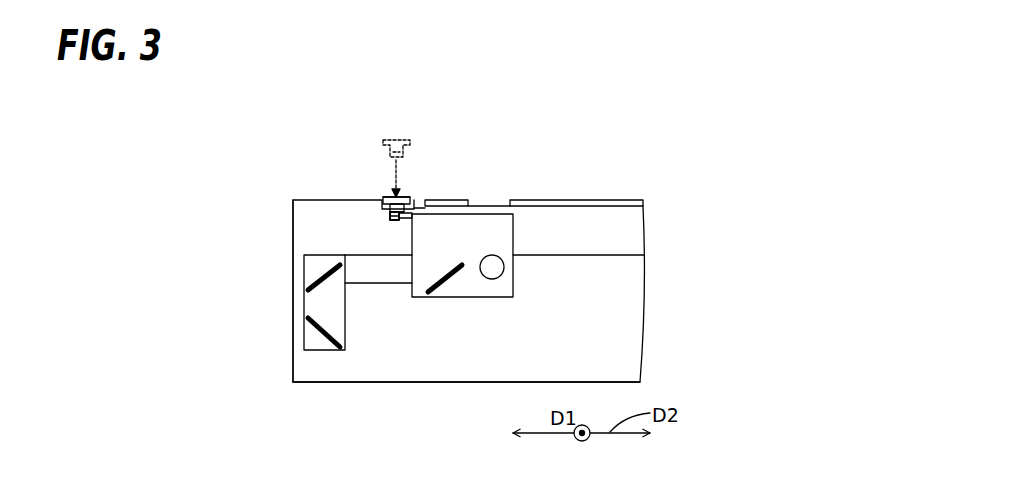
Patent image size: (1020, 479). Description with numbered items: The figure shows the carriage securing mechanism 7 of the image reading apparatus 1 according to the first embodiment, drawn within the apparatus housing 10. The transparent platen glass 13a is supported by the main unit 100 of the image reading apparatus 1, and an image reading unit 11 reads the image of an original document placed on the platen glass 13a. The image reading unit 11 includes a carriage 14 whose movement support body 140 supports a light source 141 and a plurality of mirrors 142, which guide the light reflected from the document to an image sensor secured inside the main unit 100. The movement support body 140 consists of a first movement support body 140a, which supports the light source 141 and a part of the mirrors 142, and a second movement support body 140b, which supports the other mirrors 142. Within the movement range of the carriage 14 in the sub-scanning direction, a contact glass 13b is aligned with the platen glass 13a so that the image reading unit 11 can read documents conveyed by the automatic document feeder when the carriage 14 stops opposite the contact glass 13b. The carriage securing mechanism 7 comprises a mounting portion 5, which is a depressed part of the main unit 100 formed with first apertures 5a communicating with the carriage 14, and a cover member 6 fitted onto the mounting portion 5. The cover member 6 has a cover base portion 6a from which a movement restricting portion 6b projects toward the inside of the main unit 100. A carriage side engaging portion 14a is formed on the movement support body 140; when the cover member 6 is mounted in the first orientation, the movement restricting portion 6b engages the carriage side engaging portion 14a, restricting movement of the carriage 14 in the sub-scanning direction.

The image reading apparatus 1 is at (270, 148).
The mounting portion 5 is at (374, 209).
The first apertures 5a is at (389, 212).
The cover member 6 is at (386, 201).
The cover base portion 6a is at (397, 197).
The movement restricting portion 6b is at (393, 216).
The carriage securing mechanism 7 is at (354, 183).
The housing 10 is at (645, 129).
The image reading unit 11 is at (293, 248).
The platen glass 13a is at (643, 206).
The contact glass 13b is at (462, 207).
The carriage 14 is at (474, 296).
The carriage side engaging portion 14a is at (402, 222).
The main unit 100 is at (293, 353).
The movement support body 140 is at (468, 297).
The first movement support body 140a is at (480, 298).
The second movement support body 140b is at (331, 350).
The light source 141 is at (501, 258).
The mirrors 142 is at (327, 330).